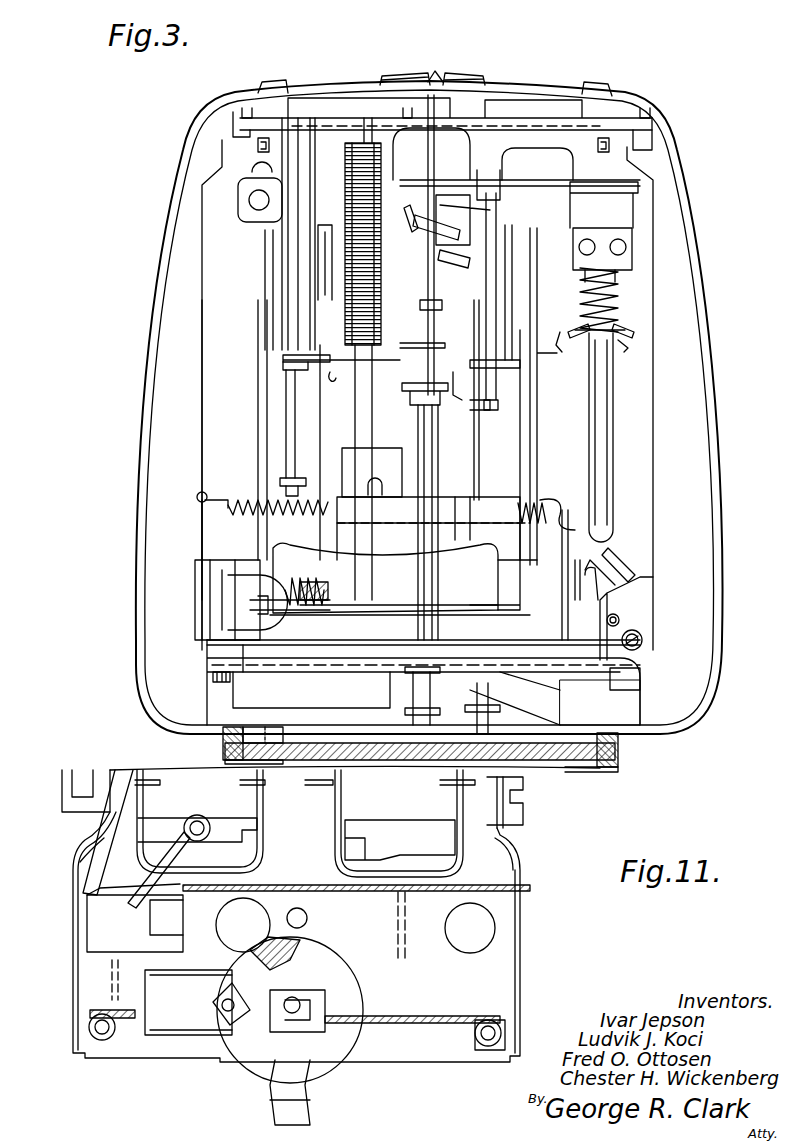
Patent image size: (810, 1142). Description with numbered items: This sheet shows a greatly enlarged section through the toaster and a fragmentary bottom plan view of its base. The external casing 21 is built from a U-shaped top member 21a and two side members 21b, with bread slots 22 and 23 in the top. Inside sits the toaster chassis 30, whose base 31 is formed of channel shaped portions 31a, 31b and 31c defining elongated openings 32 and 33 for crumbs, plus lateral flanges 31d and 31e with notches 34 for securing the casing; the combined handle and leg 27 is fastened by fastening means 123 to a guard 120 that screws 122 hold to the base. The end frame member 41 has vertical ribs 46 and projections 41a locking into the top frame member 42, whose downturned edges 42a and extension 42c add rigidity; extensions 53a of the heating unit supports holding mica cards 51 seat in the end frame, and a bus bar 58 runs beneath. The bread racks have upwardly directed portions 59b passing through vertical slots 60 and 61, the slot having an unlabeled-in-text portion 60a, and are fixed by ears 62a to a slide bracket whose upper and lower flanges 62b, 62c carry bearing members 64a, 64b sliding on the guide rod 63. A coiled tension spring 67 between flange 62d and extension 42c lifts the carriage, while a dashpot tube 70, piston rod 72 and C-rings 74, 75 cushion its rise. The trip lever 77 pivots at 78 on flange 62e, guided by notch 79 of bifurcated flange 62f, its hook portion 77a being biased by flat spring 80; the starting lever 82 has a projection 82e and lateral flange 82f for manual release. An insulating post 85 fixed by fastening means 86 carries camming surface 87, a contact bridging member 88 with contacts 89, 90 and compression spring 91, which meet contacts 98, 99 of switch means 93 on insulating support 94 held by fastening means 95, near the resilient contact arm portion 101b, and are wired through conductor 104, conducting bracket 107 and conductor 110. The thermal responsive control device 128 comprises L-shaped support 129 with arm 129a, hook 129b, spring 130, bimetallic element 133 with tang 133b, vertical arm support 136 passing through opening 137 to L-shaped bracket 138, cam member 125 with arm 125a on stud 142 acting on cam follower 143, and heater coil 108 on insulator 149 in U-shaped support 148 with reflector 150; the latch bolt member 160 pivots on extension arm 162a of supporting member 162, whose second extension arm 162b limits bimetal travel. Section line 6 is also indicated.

In FIG. 3, the external casing 21 is at (722, 325).
In FIG. 3, the U-shaped top member 21a is at (435, 78).
In FIG. 3, the side members 21b is at (165, 300).
In FIG. 3, the bread slot 22 is at (392, 78).
In FIG. 3, the bread slot 23 is at (478, 78).
In FIG. 3, the combined handle and leg 27 is at (625, 750).
In FIG. 3, the toaster chassis 30 is at (199, 340).
In FIG. 11, the base 31 is at (528, 873).
In FIG. 11, the channel shaped portion 31a is at (524, 815).
In FIG. 11, the channel shaped portion 31b is at (305, 821).
In FIG. 11, the channel shaped portion 31c is at (115, 775).
In FIG. 11, the lateral flange 31d is at (528, 826).
In FIG. 11, the lateral flange 31e is at (78, 812).
In FIG. 11, the elongated opening 32 is at (348, 808).
In FIG. 11, the elongated opening 33 is at (245, 818).
In FIG. 11, the notch 34 is at (66, 778).
In FIG. 3, the end frame member 41 is at (648, 265).
In FIG. 3, the projection 41a is at (258, 93).
In FIG. 3, the top frame member 42 is at (540, 118).
In FIG. 3, the downturned edges 42a is at (233, 128).
In FIG. 3, the extension of top frame member 42c is at (378, 110).
In FIG. 3, the vertical ribs 46 is at (248, 358).
In FIG. 3, the mica cards 51 is at (240, 565).
In FIG. 3, the extensions of upper supports 53a is at (255, 147).
In FIG. 3, the bus bar 58 is at (283, 640).
In FIG. 11, the bus bar 58 is at (423, 825).
In FIG. 3, the upwardly directed portion of bread rack 59b is at (268, 320).
In FIG. 3, the vertical slot 60 is at (330, 375).
In FIG. 3, the lever arm 60a is at (403, 210).
In FIG. 3, the vertical slot 61 is at (537, 443).
In FIG. 3, the ears 62a is at (320, 258).
In FIG. 3, the upper lateral flange 62b is at (543, 178).
In FIG. 3, the lower lateral flange 62c is at (472, 405).
In FIG. 3, the flange 62d is at (300, 365).
In FIG. 3, the vertically disposed lateral flange 62e is at (445, 380).
In FIG. 3, the bifurcated projecting flange 62f is at (478, 370).
In FIG. 3, the guide rod 63 is at (425, 320).
In FIG. 11, the guide rod 63 is at (308, 917).
In FIG. 3, the bearing member 64a is at (452, 182).
In FIG. 3, the bearing member 64b is at (420, 418).
In FIG. 3, the coiled tension spring 67 is at (345, 120).
In FIG. 3, the dashpot tube 70 is at (296, 135).
In FIG. 3, the piston rod 72 is at (290, 425).
In FIG. 3, the C-ring 74 is at (283, 358).
In FIG. 3, the C-ring 75 is at (282, 480).
In FIG. 3, the trip lever 77 is at (492, 268).
In FIG. 3, the hook portion 77a is at (498, 400).
In FIG. 3, the pivot 78 is at (488, 300).
In FIG. 3, the notch 79 is at (492, 365).
In FIG. 3, the biasing spring 80 is at (460, 250).
In FIG. 3, the starting lever 82 is at (430, 240).
In FIG. 3, the projection 82e is at (440, 262).
In FIG. 3, the lateral flange 82f is at (492, 178).
In FIG. 3, the insulating post 85 is at (588, 238).
In FIG. 3, the fastening means 86 is at (618, 240).
In FIG. 3, the camming surface 87 is at (612, 372).
In FIG. 3, the contact bridging member 88 is at (618, 330).
In FIG. 3, the contact 89 is at (580, 340).
In FIG. 3, the contact 90 is at (628, 345).
In FIG. 3, the coiled compression spring 91 is at (620, 293).
In FIG. 3, the switch means 93 is at (641, 602).
In FIG. 11, the switch means 93 is at (92, 914).
In FIG. 3, the insulating support 94 is at (622, 623).
In FIG. 3, the fastening means 95 is at (642, 642).
In FIG. 3, the first contact 98 is at (535, 524).
In FIG. 3, the second contact 99 is at (625, 555).
In FIG. 3, the contact 101b is at (592, 570).
In FIG. 11, the conductor 104 is at (90, 858).
In FIG. 3, the conducting bracket 107 is at (505, 620).
In FIG. 11, the conducting bracket 107 is at (155, 932).
In FIG. 3, the heater coil 108 is at (325, 588).
In FIG. 11, the conductor 110 is at (150, 876).
In FIG. 11, the guard 120 is at (435, 1015).
In FIG. 3, the fastening means 122 is at (225, 678).
In FIG. 11, the fastening means 122 is at (105, 1045).
In FIG. 3, the fastening means 123 is at (223, 752).
In FIG. 3, the cam member 125 is at (420, 682).
In FIG. 11, the cam member 125 is at (350, 975).
In FIG. 11, the arm of cam member 125a is at (285, 1113).
In FIG. 3, the thermal responsive control device 128 is at (174, 570).
In FIG. 3, the L-shaped support 129 is at (250, 636).
In FIG. 3, the upwardly directed arm 129a is at (210, 605).
In FIG. 3, the hook shaped portion 129b is at (200, 492).
In FIG. 3, the spring 130 is at (245, 505).
In FIG. 3, the bimetallic element 133 is at (258, 560).
In FIG. 3, the tang portion 133b is at (555, 515).
In FIG. 3, the vertical arm support 136 is at (590, 540).
In FIG. 11, the opening 137 is at (140, 1000).
In FIG. 11, the L-shaped bracket 138 is at (213, 1035).
In FIG. 3, the stud 142 is at (413, 700).
In FIG. 11, the stud 142 is at (305, 1002).
In FIG. 3, the cam follower 143 is at (505, 730).
In FIG. 11, the cam follower 143 is at (210, 1000).
In FIG. 3, the U-shaped support 148 is at (260, 628).
In FIG. 3, the insulator 149 is at (308, 595).
In FIG. 3, the troughlike reflector 150 is at (410, 583).
In FIG. 3, the latch bolt member 160 is at (414, 562).
In FIG. 3, the latch bolt supporting member 162 is at (328, 534).
In FIG. 3, the extension arm 162a is at (475, 520).
In FIG. 3, the second extension arm 162b is at (372, 472).
In FIG. 3, the section line 6 is at (180, 522).